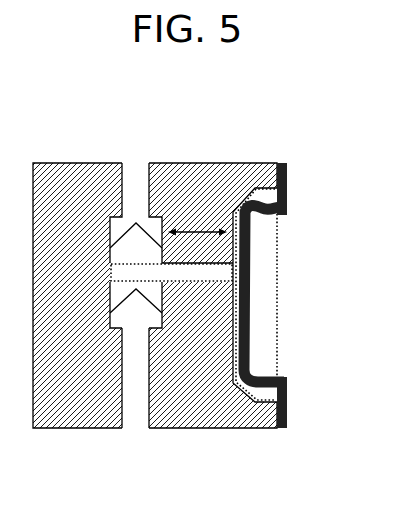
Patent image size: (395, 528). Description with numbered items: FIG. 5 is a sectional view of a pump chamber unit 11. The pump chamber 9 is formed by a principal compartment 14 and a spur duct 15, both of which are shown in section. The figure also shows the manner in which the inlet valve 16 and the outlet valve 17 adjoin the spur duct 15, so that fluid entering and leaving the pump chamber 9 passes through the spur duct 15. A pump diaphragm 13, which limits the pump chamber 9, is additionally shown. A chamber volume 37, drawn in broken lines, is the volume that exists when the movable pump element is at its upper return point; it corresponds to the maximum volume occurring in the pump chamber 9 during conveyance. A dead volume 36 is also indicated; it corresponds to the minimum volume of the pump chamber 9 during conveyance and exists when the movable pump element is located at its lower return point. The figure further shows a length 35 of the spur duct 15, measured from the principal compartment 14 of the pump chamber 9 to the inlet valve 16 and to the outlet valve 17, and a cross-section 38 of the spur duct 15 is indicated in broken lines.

The valve assembly 11 is at (62, 128).
The outlet valve 17 is at (108, 217).
The inlet valve 16 is at (107, 330).
The spur duct 15 is at (181, 285).
The cross-section 38 is at (226, 276).
The length 35 is at (197, 228).
The pump chamber 9 is at (240, 198).
The chamber volume 37 is at (281, 246).
The principal compartment 14 is at (260, 310).
The dead volume 36 is at (262, 190).
The pump diaphragm 13 is at (288, 164).